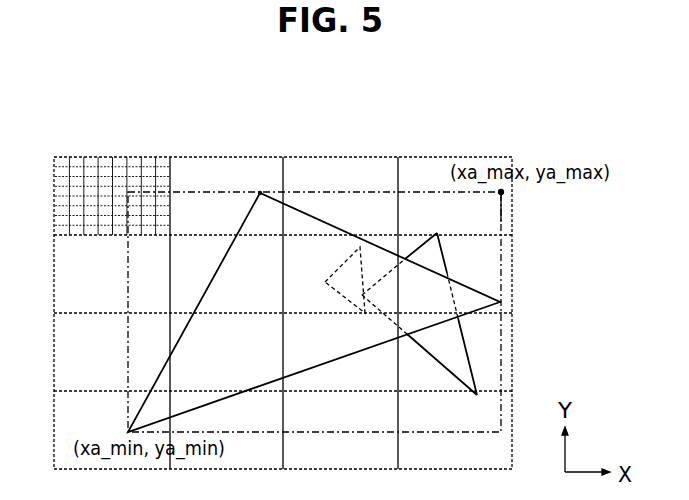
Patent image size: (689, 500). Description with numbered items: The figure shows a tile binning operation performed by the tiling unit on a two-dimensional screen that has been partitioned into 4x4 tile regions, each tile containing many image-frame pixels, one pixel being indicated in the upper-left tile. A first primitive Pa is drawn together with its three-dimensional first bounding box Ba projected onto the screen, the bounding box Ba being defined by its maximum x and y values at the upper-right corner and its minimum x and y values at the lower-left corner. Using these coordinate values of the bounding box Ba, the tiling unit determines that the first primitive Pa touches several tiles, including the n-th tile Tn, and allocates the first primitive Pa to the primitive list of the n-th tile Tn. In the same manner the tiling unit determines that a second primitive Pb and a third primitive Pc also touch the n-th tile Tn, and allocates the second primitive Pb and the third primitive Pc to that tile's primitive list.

The first primitive Pa is at (245, 215).
The second primitive Pb is at (383, 237).
The third primitive Pc is at (443, 253).
The n-th tile Tn is at (310, 233).
The first bounding box Ba is at (503, 213).
The element pixel is at (63, 157).
The 4×4 tiles 4x4 tile is at (453, 136).